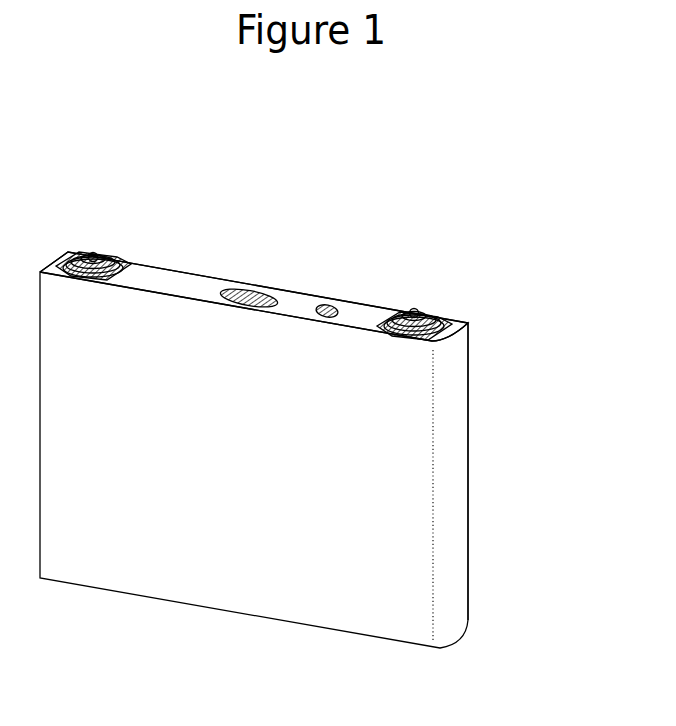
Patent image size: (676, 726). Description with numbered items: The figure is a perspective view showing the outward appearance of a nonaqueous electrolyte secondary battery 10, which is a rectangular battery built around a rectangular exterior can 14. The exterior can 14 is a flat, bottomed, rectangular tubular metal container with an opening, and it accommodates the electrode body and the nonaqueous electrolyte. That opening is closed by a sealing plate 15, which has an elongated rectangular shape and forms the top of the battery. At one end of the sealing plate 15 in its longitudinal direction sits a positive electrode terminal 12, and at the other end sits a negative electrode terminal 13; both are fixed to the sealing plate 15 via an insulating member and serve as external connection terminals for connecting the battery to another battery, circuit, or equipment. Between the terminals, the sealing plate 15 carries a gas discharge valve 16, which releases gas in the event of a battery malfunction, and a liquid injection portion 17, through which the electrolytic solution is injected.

The nonaqueous electrolyte secondary battery 10 is at (498, 236).
The positive electrode terminal 12 is at (413, 310).
The negative electrode terminal 13 is at (93, 256).
The exterior can 14 is at (456, 428).
The sealing plate 15 is at (173, 289).
The gas discharge valve 16 is at (249, 292).
The liquid injection portion 17 is at (328, 306).